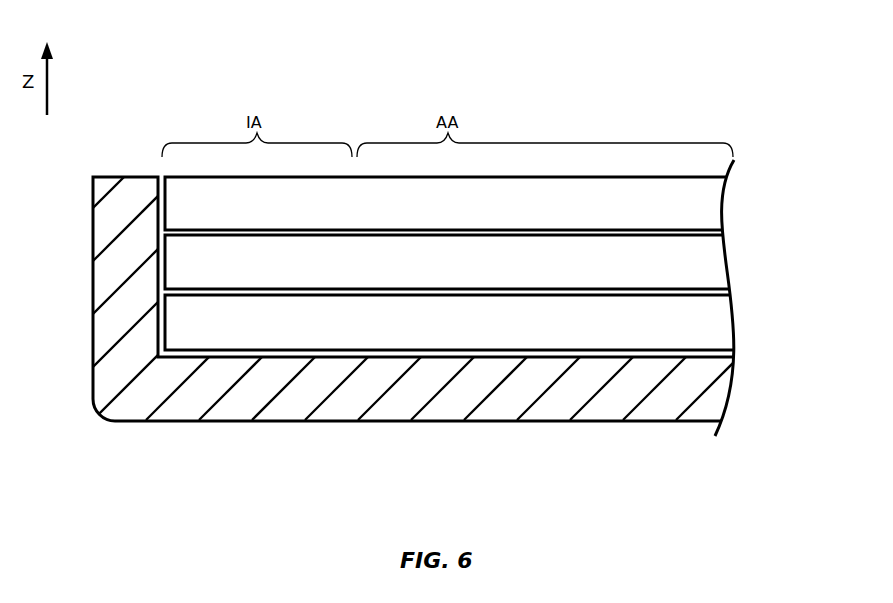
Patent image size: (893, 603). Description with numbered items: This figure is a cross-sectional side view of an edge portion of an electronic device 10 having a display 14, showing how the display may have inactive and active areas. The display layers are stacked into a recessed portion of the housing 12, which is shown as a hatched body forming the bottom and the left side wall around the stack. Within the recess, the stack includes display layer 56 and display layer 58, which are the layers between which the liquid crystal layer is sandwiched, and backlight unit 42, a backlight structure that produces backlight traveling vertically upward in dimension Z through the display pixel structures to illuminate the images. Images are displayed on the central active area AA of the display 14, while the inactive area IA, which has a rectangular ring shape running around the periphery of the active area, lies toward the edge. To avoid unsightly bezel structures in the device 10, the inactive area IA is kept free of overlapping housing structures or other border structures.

The display 14 is at (614, 68).
The housing 12 is at (397, 403).
The device 10 is at (516, 305).
The display layer 56 is at (706, 203).
The display layer 58 is at (711, 257).
The backlight unit 42 is at (478, 322).